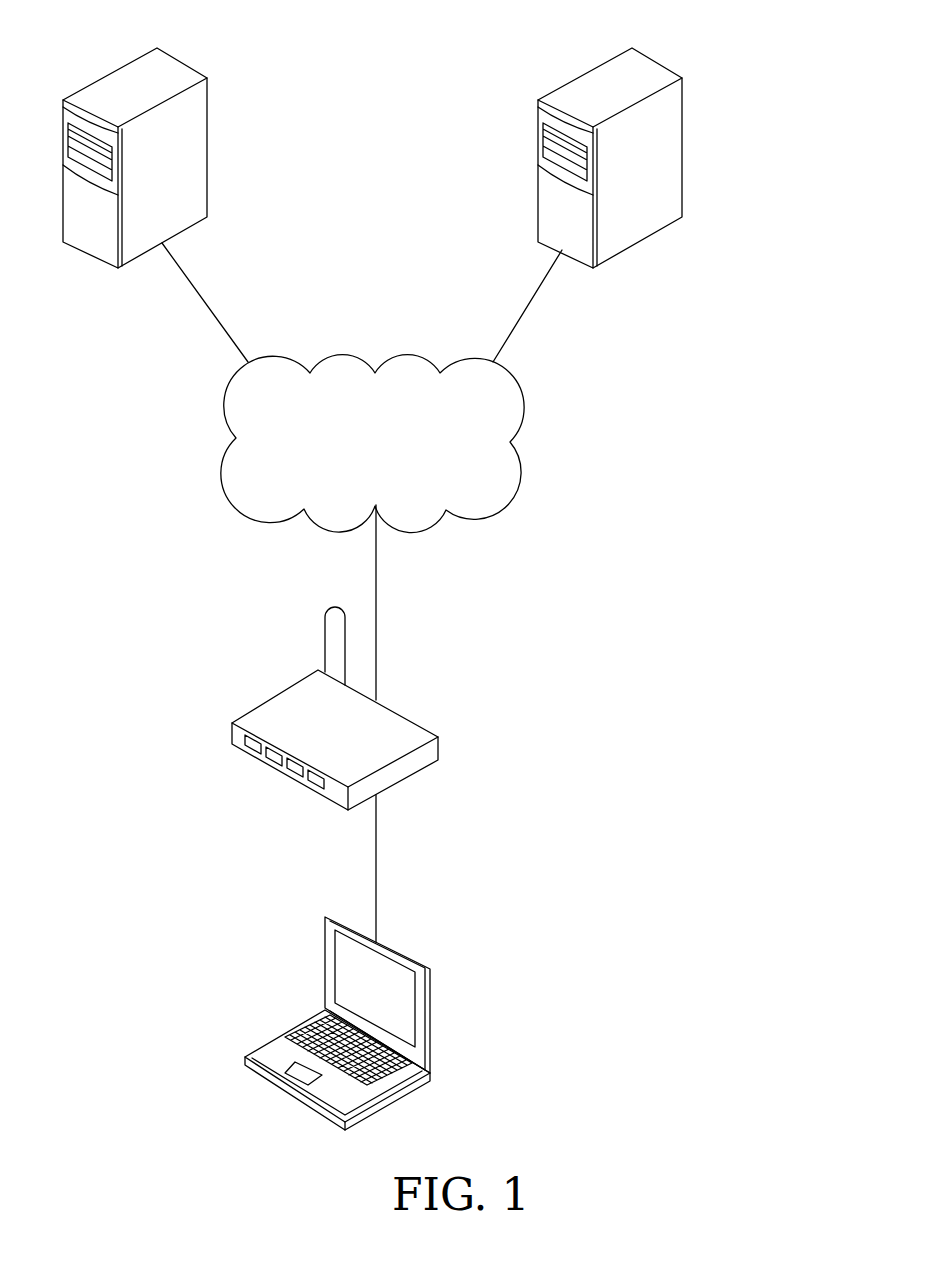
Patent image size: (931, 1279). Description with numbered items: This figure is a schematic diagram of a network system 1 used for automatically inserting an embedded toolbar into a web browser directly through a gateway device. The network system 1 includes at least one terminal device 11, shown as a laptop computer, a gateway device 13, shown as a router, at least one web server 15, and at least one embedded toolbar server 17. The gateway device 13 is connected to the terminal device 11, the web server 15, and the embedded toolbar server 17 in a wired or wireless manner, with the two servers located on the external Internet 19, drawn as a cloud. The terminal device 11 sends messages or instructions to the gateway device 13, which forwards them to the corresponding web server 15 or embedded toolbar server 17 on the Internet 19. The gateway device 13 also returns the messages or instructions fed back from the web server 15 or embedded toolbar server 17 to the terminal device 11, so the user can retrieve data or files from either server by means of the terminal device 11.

The network system 1 is at (778, 332).
The terminal device 11 is at (390, 1015).
The gateway device 13 is at (420, 758).
The web server 15 is at (130, 78).
The embedded toolbar server 17 is at (603, 78).
The Internet 19 is at (503, 470).